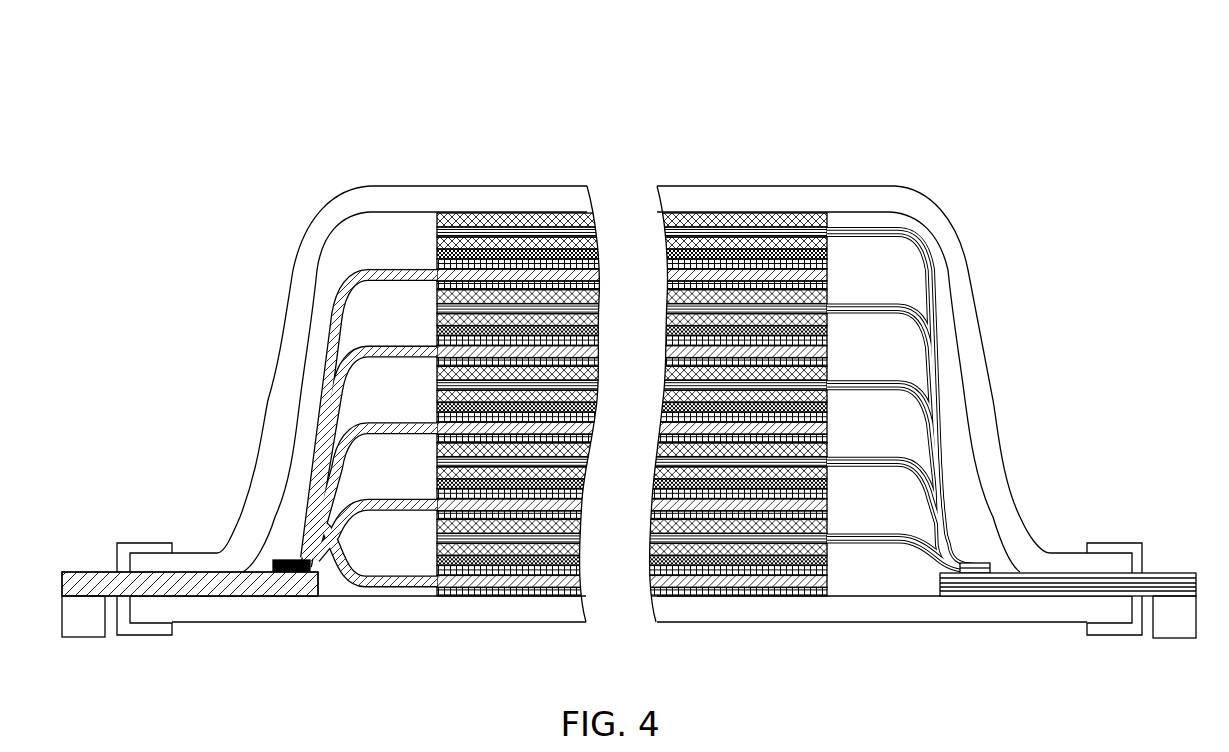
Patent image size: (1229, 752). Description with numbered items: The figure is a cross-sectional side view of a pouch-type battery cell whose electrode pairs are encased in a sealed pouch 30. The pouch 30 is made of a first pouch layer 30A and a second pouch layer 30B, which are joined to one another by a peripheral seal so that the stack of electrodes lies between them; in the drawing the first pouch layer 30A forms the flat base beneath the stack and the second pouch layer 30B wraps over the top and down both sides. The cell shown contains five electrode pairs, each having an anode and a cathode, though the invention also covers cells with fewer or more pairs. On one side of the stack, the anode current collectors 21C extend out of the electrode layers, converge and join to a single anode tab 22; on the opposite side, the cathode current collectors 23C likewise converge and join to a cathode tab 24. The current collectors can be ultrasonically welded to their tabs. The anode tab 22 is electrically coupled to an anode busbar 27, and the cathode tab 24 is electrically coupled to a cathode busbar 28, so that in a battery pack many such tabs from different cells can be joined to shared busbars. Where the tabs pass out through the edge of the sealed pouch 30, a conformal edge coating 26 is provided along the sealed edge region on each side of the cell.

The sealed pouch 30 is at (778, 104).
The first pouch layer 30A is at (823, 618).
The second pouch layer 30B is at (832, 200).
The anode current collectors 21C is at (932, 470).
The cathode current collectors 23C is at (333, 462).
The anode tab 22 is at (1170, 588).
The cathode tab 24 is at (78, 587).
The conformal edge coating 26 is at (122, 546).
The anode busbar 27 is at (1175, 628).
The cathode busbar 28 is at (83, 628).